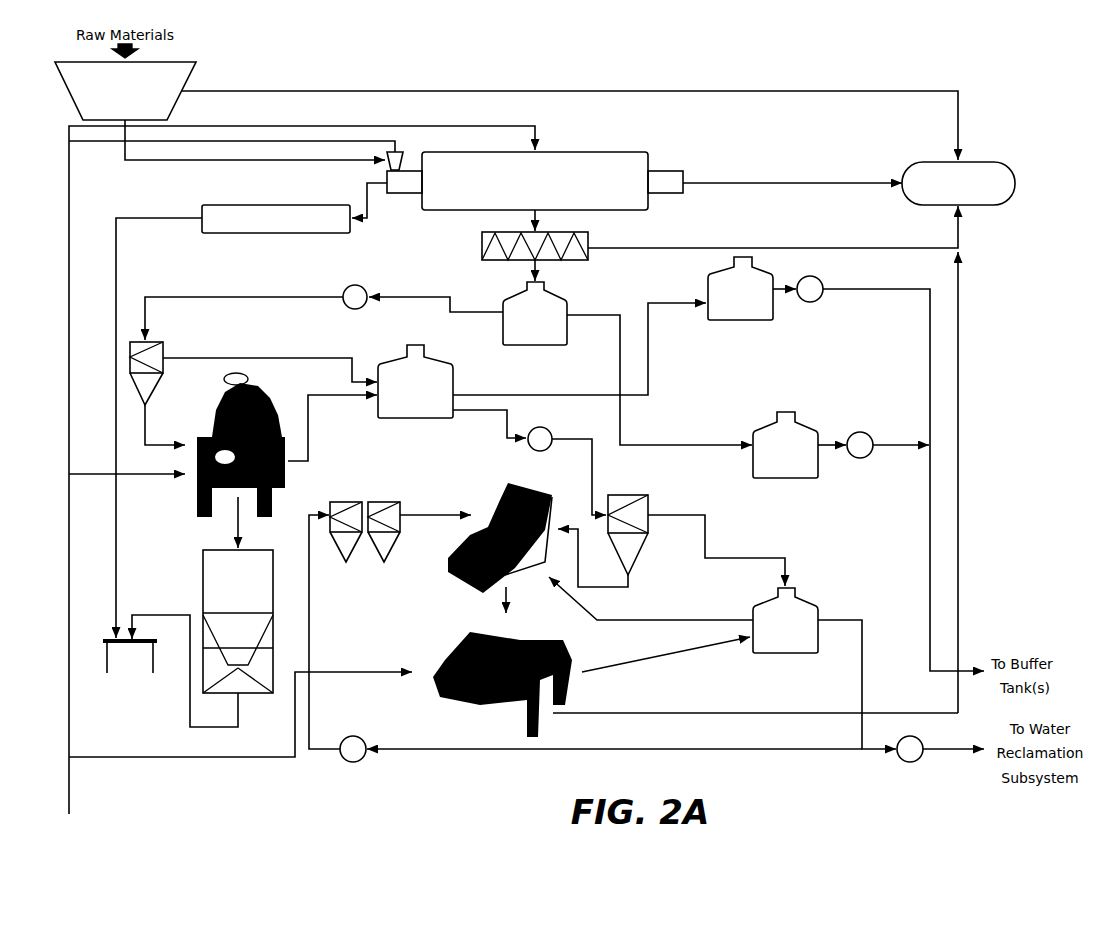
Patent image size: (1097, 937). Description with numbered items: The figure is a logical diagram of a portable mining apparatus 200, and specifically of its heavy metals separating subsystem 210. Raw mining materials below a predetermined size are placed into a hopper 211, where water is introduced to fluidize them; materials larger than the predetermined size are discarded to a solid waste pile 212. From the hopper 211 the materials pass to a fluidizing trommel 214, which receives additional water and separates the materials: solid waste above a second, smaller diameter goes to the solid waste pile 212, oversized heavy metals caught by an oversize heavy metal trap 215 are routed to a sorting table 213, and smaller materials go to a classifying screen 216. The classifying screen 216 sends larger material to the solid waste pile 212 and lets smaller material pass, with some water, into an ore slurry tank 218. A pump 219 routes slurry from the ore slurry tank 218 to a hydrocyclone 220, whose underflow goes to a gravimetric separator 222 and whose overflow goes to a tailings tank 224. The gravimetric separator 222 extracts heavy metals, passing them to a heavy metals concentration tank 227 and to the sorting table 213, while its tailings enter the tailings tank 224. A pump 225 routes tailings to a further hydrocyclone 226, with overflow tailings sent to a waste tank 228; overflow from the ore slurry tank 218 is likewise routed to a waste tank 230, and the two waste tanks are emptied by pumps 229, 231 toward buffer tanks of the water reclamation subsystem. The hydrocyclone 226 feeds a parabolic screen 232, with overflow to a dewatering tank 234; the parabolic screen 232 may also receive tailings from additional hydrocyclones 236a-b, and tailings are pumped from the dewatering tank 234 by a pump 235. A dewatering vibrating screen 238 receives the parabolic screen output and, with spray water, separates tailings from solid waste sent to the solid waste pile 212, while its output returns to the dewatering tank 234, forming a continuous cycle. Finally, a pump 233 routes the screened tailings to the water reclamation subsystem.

The portable mining apparatus 200 is at (866, 66).
The heavy metals separating subsystem 210 is at (754, 77).
The hopper 211 is at (125, 91).
The solid waste pile 212 is at (1015, 180).
The sorting table 213 is at (129, 683).
The fluidizing trommel 214 is at (535, 181).
The oversize heavy metal trap 215 is at (285, 205).
The classifying screen 216 is at (592, 246).
The ore slurry tank 218 is at (536, 329).
The pump 219 is at (346, 287).
The hydrocyclone 220 is at (166, 344).
The gravimetric separator 222 is at (256, 388).
The tailings tank 224 is at (414, 397).
The pump 225 is at (553, 432).
The hydrocyclone 226 is at (646, 494).
The heavy metals concentration tank 227 is at (238, 621).
The waste tank 228 is at (740, 304).
The pump 229 is at (822, 279).
The waste tank 230 is at (785, 461).
The pump 231 is at (860, 432).
The parabolic screen 232 is at (508, 490).
The pump 233 is at (898, 758).
The dewatering tank 234 is at (785, 638).
The pump 235 is at (340, 759).
The additional hydrocyclones 236a-b is at (385, 486).
The dewatering vibrating screen 238 is at (464, 637).